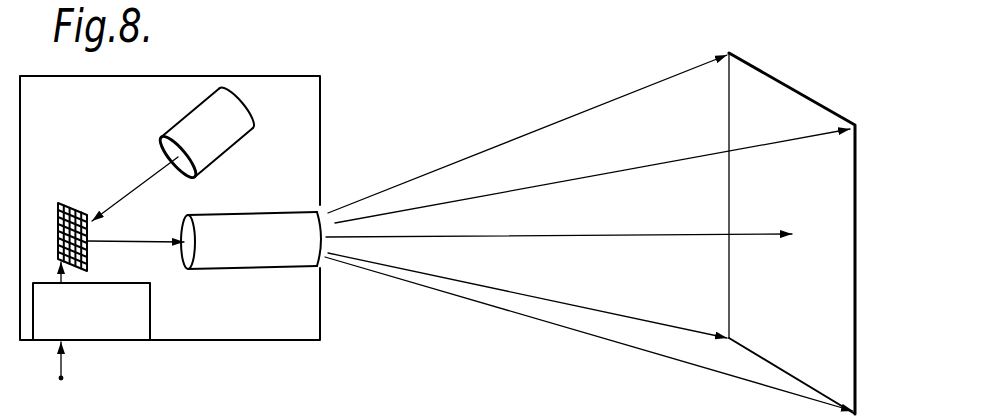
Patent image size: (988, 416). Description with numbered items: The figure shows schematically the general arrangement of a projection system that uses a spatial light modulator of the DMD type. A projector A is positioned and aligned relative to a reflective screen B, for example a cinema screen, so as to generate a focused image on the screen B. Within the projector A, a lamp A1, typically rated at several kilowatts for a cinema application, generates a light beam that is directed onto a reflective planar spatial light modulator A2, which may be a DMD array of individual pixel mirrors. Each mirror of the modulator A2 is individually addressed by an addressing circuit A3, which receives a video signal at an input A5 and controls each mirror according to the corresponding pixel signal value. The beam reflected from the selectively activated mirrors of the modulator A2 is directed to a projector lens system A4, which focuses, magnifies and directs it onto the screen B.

The projector A is at (262, 81).
The lamp A1 is at (227, 148).
The reflective planar spatial light modulator A2 is at (68, 204).
The addressing circuit A3 is at (151, 310).
The projector lens system A4 is at (310, 264).
The input A5 is at (61, 378).
The reflective screen B is at (777, 93).